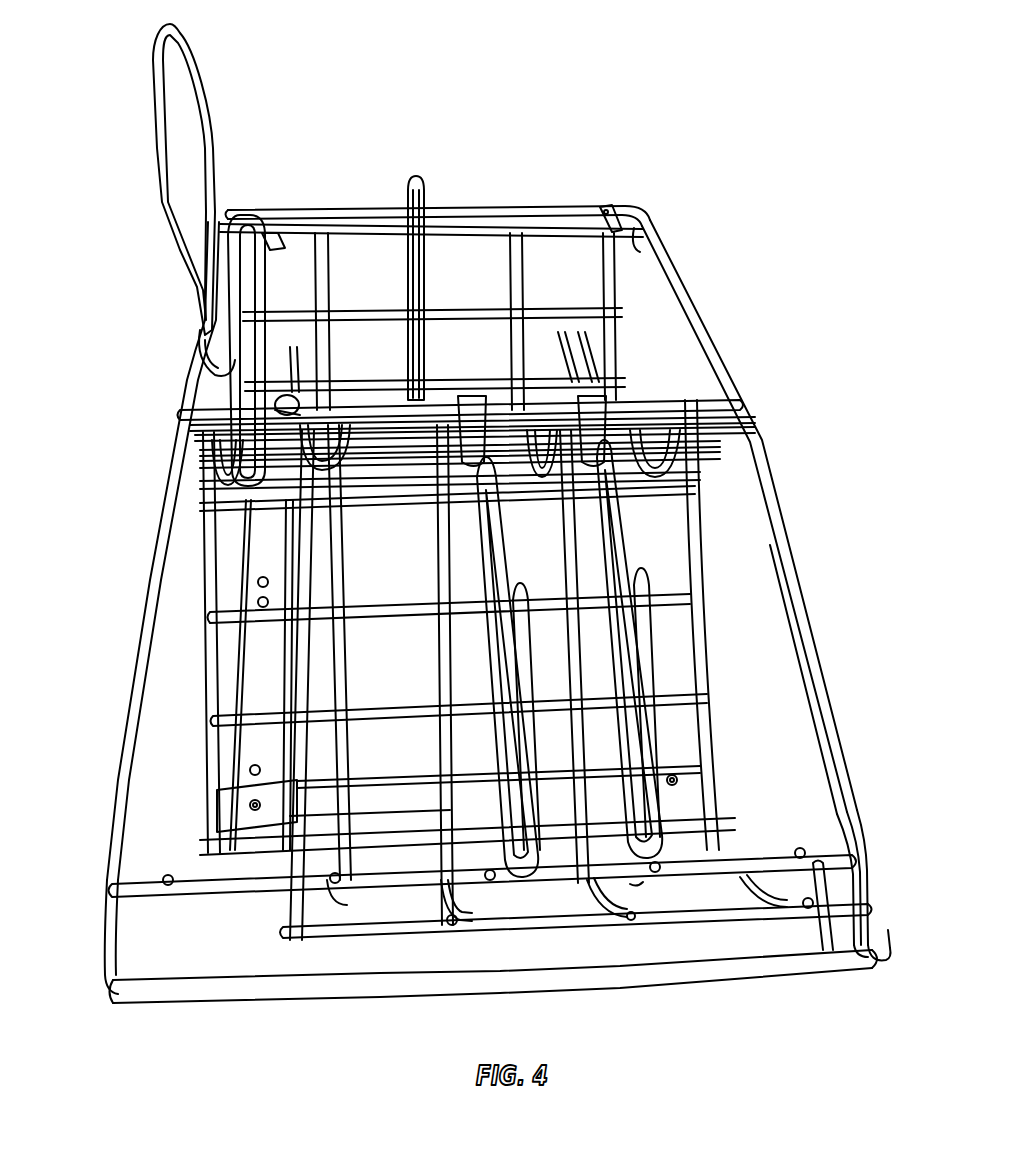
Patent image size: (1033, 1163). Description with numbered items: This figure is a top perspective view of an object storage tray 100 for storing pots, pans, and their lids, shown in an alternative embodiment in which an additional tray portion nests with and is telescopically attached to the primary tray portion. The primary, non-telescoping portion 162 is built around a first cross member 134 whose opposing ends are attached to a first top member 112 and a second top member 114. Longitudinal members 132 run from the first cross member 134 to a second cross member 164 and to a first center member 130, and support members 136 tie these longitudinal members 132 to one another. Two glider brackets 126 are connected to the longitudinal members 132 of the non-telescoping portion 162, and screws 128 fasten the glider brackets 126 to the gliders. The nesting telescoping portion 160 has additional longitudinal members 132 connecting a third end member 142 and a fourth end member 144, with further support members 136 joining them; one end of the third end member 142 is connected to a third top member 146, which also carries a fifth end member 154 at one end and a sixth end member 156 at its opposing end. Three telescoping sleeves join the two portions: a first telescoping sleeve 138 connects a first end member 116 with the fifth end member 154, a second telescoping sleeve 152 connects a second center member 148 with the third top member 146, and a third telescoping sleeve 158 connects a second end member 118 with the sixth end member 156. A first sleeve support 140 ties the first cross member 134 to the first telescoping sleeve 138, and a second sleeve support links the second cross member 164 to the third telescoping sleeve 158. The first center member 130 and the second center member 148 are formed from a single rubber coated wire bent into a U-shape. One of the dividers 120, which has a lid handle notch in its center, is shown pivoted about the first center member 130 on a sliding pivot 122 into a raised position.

The object storage tray 100 is at (684, 126).
The first top member 112 is at (146, 656).
The second top member 114 is at (844, 722).
The first end member 116 is at (107, 992).
The second end member 118 is at (220, 210).
The divider 120 is at (163, 183).
The sliding pivot 122 is at (290, 397).
The glider bracket 126 is at (697, 793).
The screw 128 is at (683, 782).
The first center member 130 is at (722, 405).
The longitudinal member 132 is at (310, 570).
The first cross member 134 is at (127, 890).
The support member 136 is at (687, 590).
The first telescoping sleeve 138 is at (193, 347).
The first sleeve support 140 is at (813, 880).
The third end member 142 is at (857, 908).
The fourth end member 144 is at (633, 240).
The third top member 146 is at (848, 800).
The second center member 148 is at (212, 447).
The second telescoping sleeve 152 is at (673, 460).
The fifth end member 154 is at (883, 963).
The sixth end member 156 is at (627, 210).
The third telescoping sleeve 158 is at (370, 210).
The telescoping portion 160 is at (268, 944).
The non-telescoping portion 162 is at (178, 742).
The second cross member 164 is at (607, 207).